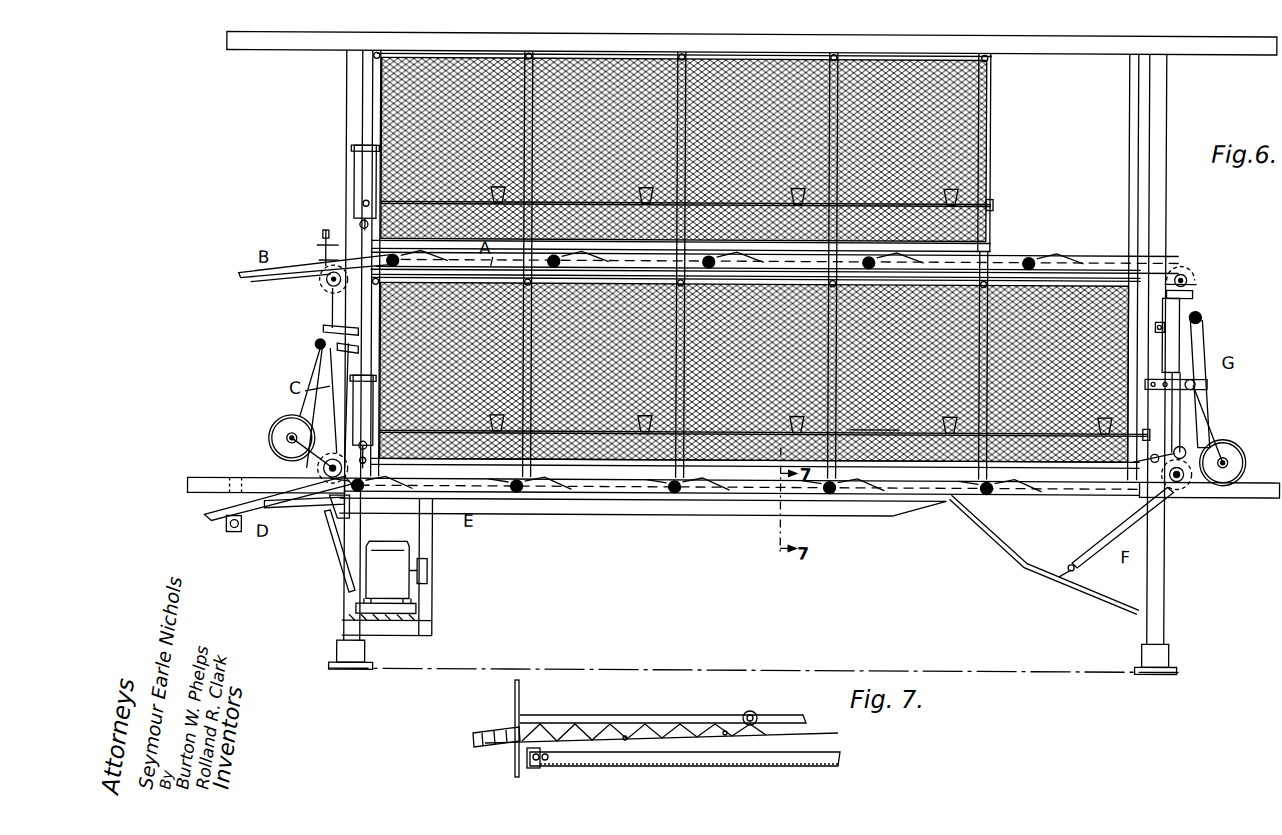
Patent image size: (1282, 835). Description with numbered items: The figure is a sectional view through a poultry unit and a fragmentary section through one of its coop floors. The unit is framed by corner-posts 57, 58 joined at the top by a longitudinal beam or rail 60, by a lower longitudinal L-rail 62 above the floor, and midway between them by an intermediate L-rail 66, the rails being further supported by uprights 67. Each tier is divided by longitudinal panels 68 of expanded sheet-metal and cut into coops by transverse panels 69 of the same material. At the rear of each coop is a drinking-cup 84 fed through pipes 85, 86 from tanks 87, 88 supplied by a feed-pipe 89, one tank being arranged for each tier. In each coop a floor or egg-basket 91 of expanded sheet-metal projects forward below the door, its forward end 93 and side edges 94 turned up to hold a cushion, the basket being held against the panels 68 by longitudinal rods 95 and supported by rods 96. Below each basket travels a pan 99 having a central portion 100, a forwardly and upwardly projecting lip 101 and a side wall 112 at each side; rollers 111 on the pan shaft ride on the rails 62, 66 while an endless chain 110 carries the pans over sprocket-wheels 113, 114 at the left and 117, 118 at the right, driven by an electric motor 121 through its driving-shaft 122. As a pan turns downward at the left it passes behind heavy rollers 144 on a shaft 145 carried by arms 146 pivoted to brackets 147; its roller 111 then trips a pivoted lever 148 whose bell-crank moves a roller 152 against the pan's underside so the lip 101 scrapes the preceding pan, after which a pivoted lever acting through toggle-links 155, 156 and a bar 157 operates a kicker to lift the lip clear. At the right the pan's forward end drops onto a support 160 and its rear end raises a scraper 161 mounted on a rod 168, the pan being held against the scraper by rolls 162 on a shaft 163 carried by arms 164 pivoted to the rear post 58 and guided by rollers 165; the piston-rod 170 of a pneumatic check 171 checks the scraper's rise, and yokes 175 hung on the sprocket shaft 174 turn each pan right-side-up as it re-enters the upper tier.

In FIG. 6, the corner-post 57 is at (345, 95).
In FIG. 6, the rear corner-post 58 is at (1168, 112).
In FIG. 6, the longitudinal metal beam or rail 60 is at (293, 52).
In FIG. 6, the longitudinal L-rail 62 is at (1268, 498).
In FIG. 7, the longitudinal L-rail 62 is at (533, 770).
In FIG. 6, the longitudinal L-rail 66 is at (1100, 258).
In FIG. 6, the upright 67 is at (371, 117).
In FIG. 7, the upright 67 is at (514, 692).
In FIG. 6, the longitudinal panel 68 is at (752, 70).
In FIG. 6, the transverse panel 69 is at (686, 65).
In FIG. 6, the drinking-cup 84 is at (986, 192).
In FIG. 6, the pipe 85 is at (992, 203).
In FIG. 6, the cross bar 86 is at (880, 440).
In FIG. 6, the tank 87 is at (353, 180).
In FIG. 6, the tank 88 is at (300, 425).
In FIG. 6, the feed-pipe 89 is at (358, 224).
In FIG. 7, the floor- or egg-basket 91 is at (512, 746).
In FIG. 7, the forward end of basket 93 is at (475, 739).
In FIG. 7, the side edge of basket 94 is at (513, 724).
In FIG. 7, the longitudinally-arranged rod 95 is at (724, 735).
In FIG. 7, the rod 96 is at (627, 740).
In FIG. 6, the pan 99 is at (271, 285).
In FIG. 7, the pan 99 is at (781, 767).
In FIG. 6, the central portion of pan 100 is at (293, 275).
In FIG. 7, the central portion of pan 100 is at (793, 758).
In FIG. 6, the forwardly-and-upwardly-projecting lip 101 is at (204, 518).
In FIG. 6, the endless chain 110 is at (1058, 262).
In FIG. 6, the roller 111 is at (316, 348).
In FIG. 7, the roller 111 is at (538, 752).
In FIG. 6, the pin 112 is at (1082, 560).
In FIG. 7, the pin 112 is at (548, 752).
In FIG. 6, the sprocket-wheel 113 is at (290, 511).
In FIG. 6, the sprocket-wheel 114 is at (325, 292).
In FIG. 6, the sprocket-wheel 117 is at (1166, 482).
In FIG. 6, the sprocket-wheel 118 is at (1190, 279).
In FIG. 6, the electric motor 121 is at (358, 596).
In FIG. 6, the driving-shaft 122 is at (391, 577).
In FIG. 6, the roller 144 is at (285, 438).
In FIG. 6, the shaft 145 is at (288, 443).
In FIG. 6, the arm 146 is at (290, 420).
In FIG. 6, the bracket 147 is at (338, 328).
In FIG. 6, the pivoted lever 148 is at (323, 331).
In FIG. 6, the roller 152 is at (318, 470).
In FIG. 6, the toggle-link 155 is at (358, 517).
In FIG. 6, the toggle-link 156 is at (342, 567).
In FIG. 6, the bar 157 is at (287, 526).
In FIG. 6, the support 160 is at (1042, 562).
In FIG. 6, the scraper 161 is at (1222, 446).
In FIG. 6, the roll 162 is at (1246, 458).
In FIG. 6, the shaft 163 is at (1226, 466).
In FIG. 6, the arm 164 is at (1212, 422).
In FIG. 6, the roller 165 is at (1213, 356).
In FIG. 6, the rod 168 is at (1128, 472).
In FIG. 6, the piston-rod 170 is at (1181, 412).
In FIG. 6, the pneumatic check 171 is at (1180, 338).
In FIG. 6, the shaft 174 is at (1196, 283).
In FIG. 6, the yoke 175 is at (1193, 293).